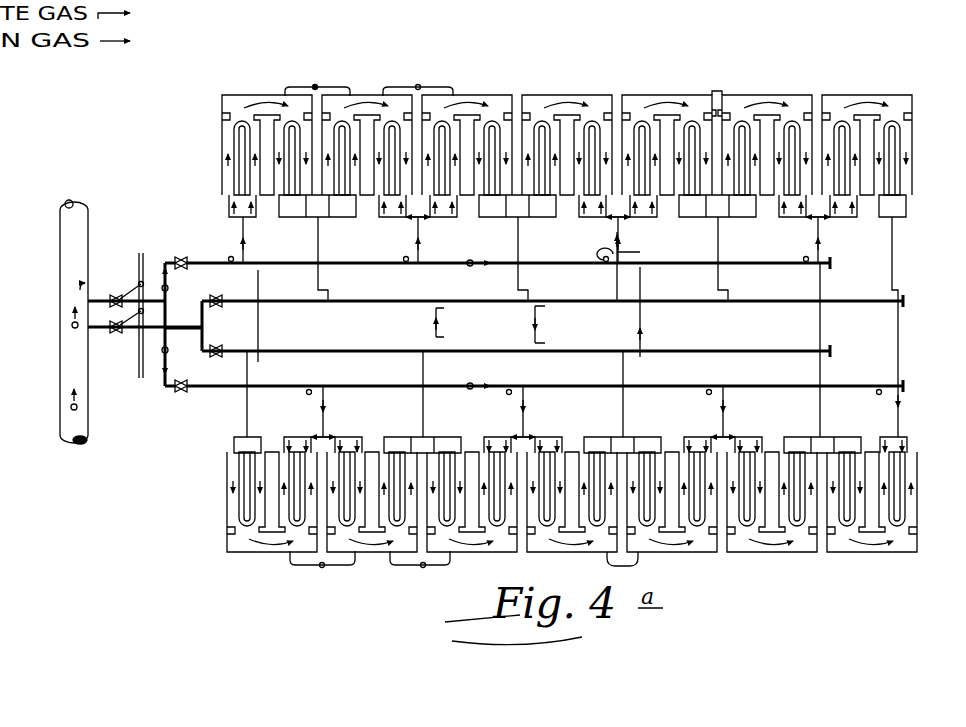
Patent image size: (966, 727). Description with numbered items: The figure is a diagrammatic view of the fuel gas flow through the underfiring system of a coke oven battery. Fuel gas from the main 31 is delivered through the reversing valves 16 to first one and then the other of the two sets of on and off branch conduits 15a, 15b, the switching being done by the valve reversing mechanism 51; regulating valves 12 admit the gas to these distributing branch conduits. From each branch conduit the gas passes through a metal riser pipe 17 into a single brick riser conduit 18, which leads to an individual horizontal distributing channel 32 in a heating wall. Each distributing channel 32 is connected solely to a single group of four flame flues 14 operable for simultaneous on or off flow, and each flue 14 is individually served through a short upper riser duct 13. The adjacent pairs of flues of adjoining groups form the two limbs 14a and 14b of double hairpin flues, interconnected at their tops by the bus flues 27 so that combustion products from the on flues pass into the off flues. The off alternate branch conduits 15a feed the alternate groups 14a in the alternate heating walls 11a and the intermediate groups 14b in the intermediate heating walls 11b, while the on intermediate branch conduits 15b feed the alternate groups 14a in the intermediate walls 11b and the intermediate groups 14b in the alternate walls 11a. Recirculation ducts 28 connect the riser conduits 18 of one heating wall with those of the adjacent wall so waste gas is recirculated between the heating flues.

The alternate heating wall 11a is at (454, 198).
The intermediate heating wall 11b is at (444, 407).
The regulating valve 12 is at (183, 394).
The riser duct 13 is at (766, 437).
The flame flue 14 is at (896, 465).
The alternate flue group 14a is at (316, 630).
The intermediate flue group 14b is at (427, 630).
The alternate branch conduit 15a is at (361, 303).
The intermediate branch conduit 15b is at (316, 385).
The reversing valve 16 is at (112, 305).
The metal riser pipe 17 is at (612, 357).
The riser conduit 18 is at (632, 262).
The bus flue 27 is at (607, 554).
The recirculation duct 28 is at (545, 341).
The main 31 is at (62, 278).
The distributing channel 32 is at (741, 432).
The valve reversing mechanism 51 is at (139, 371).